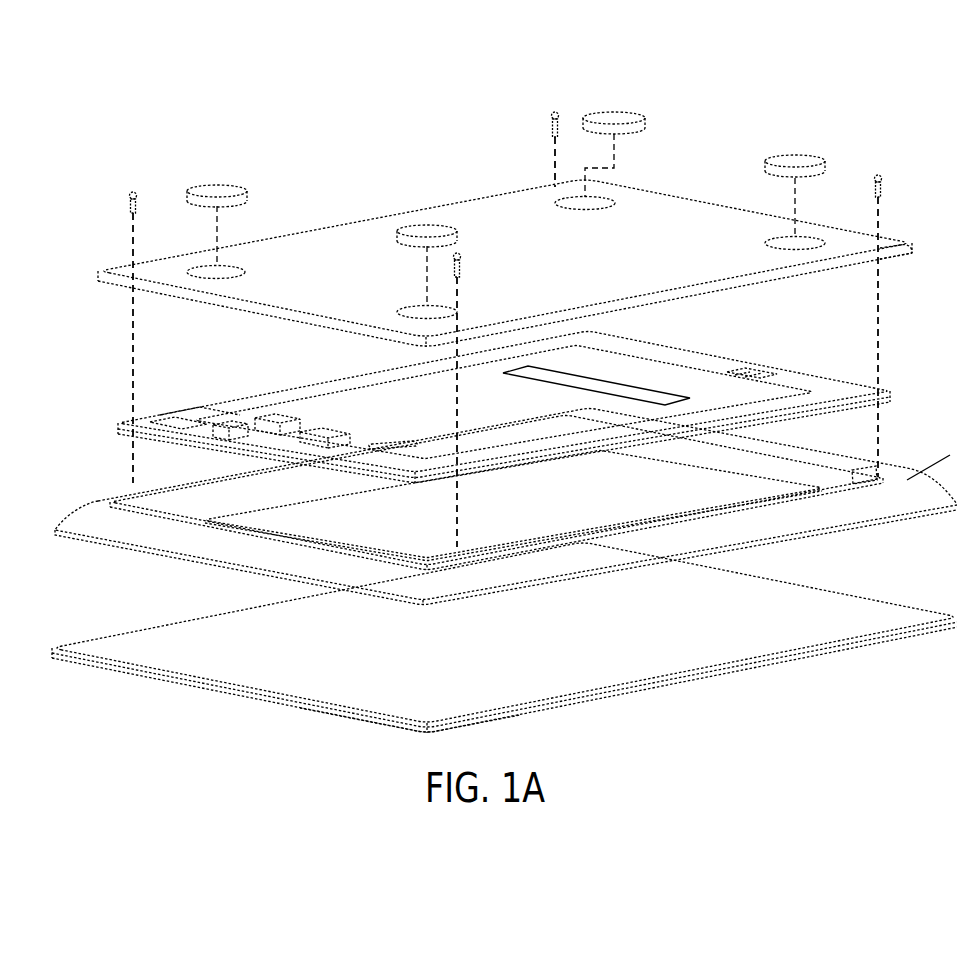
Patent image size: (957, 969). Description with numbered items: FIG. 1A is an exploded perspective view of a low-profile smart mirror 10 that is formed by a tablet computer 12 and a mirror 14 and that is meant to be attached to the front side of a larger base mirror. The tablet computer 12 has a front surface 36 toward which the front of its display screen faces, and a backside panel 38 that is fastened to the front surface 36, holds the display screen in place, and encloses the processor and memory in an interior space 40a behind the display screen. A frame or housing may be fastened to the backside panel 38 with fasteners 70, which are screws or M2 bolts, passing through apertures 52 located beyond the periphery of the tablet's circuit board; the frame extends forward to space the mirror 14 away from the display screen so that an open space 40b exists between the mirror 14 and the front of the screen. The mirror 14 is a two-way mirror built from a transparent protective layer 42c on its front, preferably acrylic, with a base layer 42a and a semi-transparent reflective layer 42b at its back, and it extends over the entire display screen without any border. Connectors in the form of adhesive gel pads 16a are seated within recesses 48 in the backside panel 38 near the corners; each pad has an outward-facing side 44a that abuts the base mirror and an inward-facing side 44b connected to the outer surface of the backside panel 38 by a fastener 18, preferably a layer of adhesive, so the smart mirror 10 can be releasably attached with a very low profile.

The smart mirror 10 is at (172, 91).
The tablet computer 12 is at (847, 385).
The mirror 14 is at (865, 610).
The adhesive gel pad 16a is at (622, 112).
The fastener 18 is at (595, 198).
The front surface 36 is at (132, 548).
The backside panel 38 is at (650, 217).
The interior space 40a is at (183, 395).
The open space 40b is at (312, 510).
The base layer 42a is at (133, 665).
The semi-transparent reflective layer 42b is at (200, 678).
The transparent protective layer 42c is at (323, 705).
The outward-facing side 44a is at (793, 158).
The inward-facing side 44b is at (812, 175).
The recess 48 is at (205, 269).
The aperture 52 is at (877, 248).
The fastener 70 is at (880, 178).